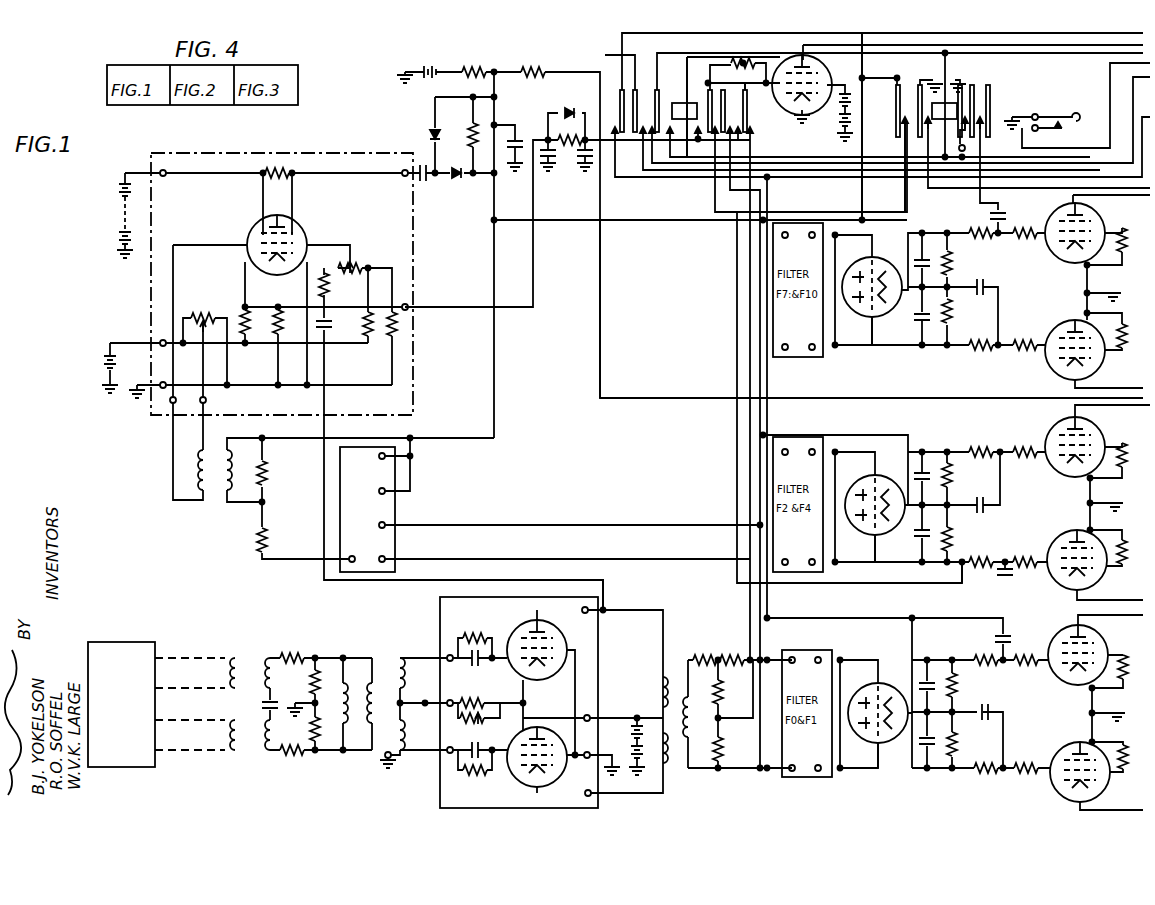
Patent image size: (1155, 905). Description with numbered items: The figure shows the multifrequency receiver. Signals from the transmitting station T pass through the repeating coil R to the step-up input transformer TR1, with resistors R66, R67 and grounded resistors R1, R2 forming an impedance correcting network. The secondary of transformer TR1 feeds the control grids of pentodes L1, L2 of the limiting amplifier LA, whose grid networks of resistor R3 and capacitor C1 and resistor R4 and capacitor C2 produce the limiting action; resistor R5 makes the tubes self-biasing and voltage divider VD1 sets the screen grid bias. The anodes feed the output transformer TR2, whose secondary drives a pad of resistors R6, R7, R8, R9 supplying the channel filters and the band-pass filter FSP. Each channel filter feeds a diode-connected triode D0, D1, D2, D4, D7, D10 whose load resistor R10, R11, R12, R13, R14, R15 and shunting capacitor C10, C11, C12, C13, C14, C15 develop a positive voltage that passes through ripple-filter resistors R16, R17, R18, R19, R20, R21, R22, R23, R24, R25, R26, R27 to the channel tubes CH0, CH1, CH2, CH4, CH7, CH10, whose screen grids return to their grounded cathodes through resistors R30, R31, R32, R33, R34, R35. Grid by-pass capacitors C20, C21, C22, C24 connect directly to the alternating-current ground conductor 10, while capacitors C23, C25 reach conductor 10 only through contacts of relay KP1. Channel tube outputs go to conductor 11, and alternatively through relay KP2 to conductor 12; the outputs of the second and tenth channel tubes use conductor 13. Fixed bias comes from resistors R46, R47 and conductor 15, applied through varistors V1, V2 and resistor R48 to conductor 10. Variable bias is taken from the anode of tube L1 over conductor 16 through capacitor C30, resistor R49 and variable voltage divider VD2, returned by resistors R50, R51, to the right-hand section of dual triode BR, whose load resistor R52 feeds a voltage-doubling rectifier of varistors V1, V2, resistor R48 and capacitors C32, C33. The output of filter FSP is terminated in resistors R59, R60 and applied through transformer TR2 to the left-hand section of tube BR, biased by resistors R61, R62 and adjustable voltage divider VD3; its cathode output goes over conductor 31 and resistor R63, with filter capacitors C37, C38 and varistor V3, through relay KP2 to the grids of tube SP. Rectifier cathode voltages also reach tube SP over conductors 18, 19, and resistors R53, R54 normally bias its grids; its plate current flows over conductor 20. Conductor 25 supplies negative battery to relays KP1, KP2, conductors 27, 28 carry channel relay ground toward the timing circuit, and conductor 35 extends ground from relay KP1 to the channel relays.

The load resistor R52 is at (264, 170).
The capacitor C32 is at (413, 172).
The varistor V2 is at (459, 180).
The dual triode BR is at (307, 230).
The variable voltage divider VD2 is at (354, 265).
The resistor R49 is at (328, 285).
The adjustable voltage divider VD3 is at (202, 316).
The resistor R61 is at (247, 335).
The resistor R62 is at (280, 335).
The capacitor C30 is at (326, 330).
The resistor R51 is at (368, 322).
The resistor R50 is at (395, 328).
The output transformer TR2 is at (218, 493).
The terminating resistor R60 is at (275, 475).
The terminating resistor R59 is at (273, 530).
The band-pass filter FSP is at (395, 511).
The conductor 31 is at (445, 307).
The resistor R46 is at (472, 66).
The resistor R47 is at (539, 66).
The varistor V1 is at (428, 136).
The resistor R48 is at (472, 127).
The capacitor C33 is at (502, 128).
The varistor V3 is at (571, 106).
The resistor R63 is at (572, 150).
The filter capacitor C37 is at (560, 164).
The filter capacitor C38 is at (594, 162).
The conductor 10 is at (492, 198).
The conductor 15 is at (603, 262).
The relay KP2 is at (685, 122).
The resistor R54 is at (735, 55).
The resistor R53 is at (766, 95).
The conductor 12 is at (800, 118).
The vacuum tube SP is at (826, 68).
The relay KP1 is at (960, 108).
The conductor 25 is at (884, 53).
The conductor 28 is at (1015, 33).
The conductor 20 is at (1034, 45).
The conductor 11 is at (1066, 53).
The conductor 27 is at (1100, 94).
The conductor 13 is at (1076, 128).
The conductor 19 is at (907, 200).
The conductor 35 is at (964, 190).
The rectifier D10 is at (870, 280).
The rectifier D7 is at (882, 330).
The shunting capacitor C15 is at (923, 258).
The shunting capacitor C14 is at (920, 335).
The load resistor R15 is at (947, 270).
The load resistor R14 is at (952, 318).
The grid by-pass capacitor C24 is at (997, 282).
The ripple-filter resistor R26 is at (977, 246).
The ripple-filter resistor R27 is at (1029, 246).
The ripple-filter resistor R24 is at (978, 350).
The ripple-filter resistor R25 is at (1023, 359).
The grid by-pass capacitor C25 is at (1002, 215).
The channel tube CH10 is at (1051, 258).
The screen grid resistor R35 is at (1126, 236).
The channel tube CH7 is at (1071, 341).
The screen grid resistor R34 is at (1123, 350).
The rectifier D4 is at (890, 470).
The rectifier D2 is at (885, 540).
The shunting capacitor C13 is at (926, 470).
The shunting capacitor C12 is at (922, 545).
The load resistor R13 is at (951, 465).
The load resistor R12 is at (952, 531).
The grid by-pass capacitor C22 is at (980, 498).
The ripple-filter resistor R22 is at (988, 439).
The ripple-filter resistor R23 is at (1032, 439).
The ripple-filter resistor R20 is at (975, 568).
The ripple-filter resistor R21 is at (1020, 556).
The grid by-pass capacitor C23 is at (1009, 584).
The channel tube CH4 is at (1067, 478).
The screen grid resistor R33 is at (1126, 444).
The channel tube CH2 is at (1068, 538).
The screen grid resistor R32 is at (1126, 569).
The conductor 18 is at (832, 583).
The rectifier D1 is at (890, 685).
The rectifier D0 is at (885, 745).
The shunting capacitor C11 is at (933, 678).
The shunting capacitor C10 is at (925, 752).
The load resistor R11 is at (958, 684).
The load resistor R10 is at (958, 746).
The grid by-pass capacitor C20 is at (988, 712).
The ripple-filter resistor R18 is at (984, 652).
The ripple-filter resistor R19 is at (1024, 663).
The ripple-filter resistor R16 is at (990, 782).
The ripple-filter resistor R17 is at (1028, 782).
The grid by-pass capacitor C21 is at (1012, 638).
The channel tube CH1 is at (1073, 630).
The screen grid resistor R31 is at (1128, 665).
The channel tube CH0 is at (1069, 748).
The screen grid resistor R30 is at (1128, 778).
The transmitting station T is at (131, 644).
The repeating coil R is at (251, 655).
The resistor R66 is at (292, 650).
The resistor R67 is at (292, 758).
The grounded resistor R1 is at (318, 670).
The grounded resistor R2 is at (318, 745).
The step-up input transformer TR1 is at (381, 655).
The limiting amplifier LA is at (440, 803).
The pentode L1 is at (560, 645).
The pentode L2 is at (552, 778).
The resistor R3 is at (471, 634).
The capacitor C1 is at (462, 666).
The resistor R5 is at (468, 699).
The voltage divider VD1 is at (482, 714).
The capacitor C2 is at (472, 745).
The resistor R4 is at (478, 775).
The pad resistor R6 is at (710, 650).
The pad resistor R7 is at (740, 650).
The pad resistor R8 is at (716, 688).
The pad resistor R9 is at (728, 746).
The conductor 16 is at (603, 585).